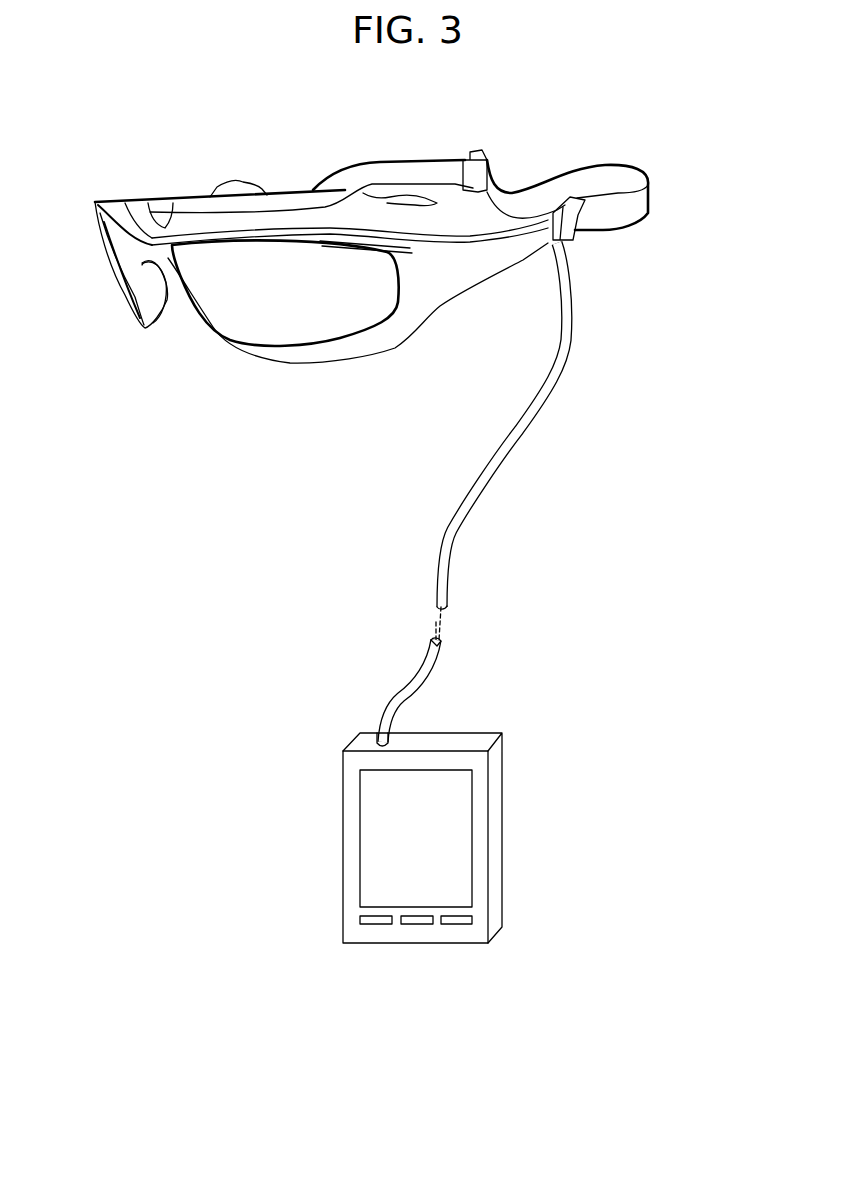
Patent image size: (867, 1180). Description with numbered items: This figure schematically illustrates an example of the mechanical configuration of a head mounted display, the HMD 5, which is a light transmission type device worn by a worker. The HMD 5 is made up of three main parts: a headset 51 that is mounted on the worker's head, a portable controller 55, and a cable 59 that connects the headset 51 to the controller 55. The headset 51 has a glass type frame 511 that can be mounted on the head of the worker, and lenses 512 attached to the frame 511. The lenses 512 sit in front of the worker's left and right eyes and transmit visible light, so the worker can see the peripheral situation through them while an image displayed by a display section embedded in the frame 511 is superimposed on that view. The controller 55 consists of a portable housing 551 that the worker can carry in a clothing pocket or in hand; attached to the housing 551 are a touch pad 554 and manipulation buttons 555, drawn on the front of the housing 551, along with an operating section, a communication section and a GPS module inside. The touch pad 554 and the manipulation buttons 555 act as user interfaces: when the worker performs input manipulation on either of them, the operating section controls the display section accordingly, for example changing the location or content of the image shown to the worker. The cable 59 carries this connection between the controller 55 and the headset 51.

The HMD 5 is at (650, 160).
The headset 51 is at (122, 202).
The frame 511 is at (410, 312).
The lenses 512 is at (270, 325).
The cable 59 is at (533, 405).
The controller 55 is at (429, 884).
The housing 551 is at (497, 880).
The touch pad 554 is at (378, 852).
The manipulation buttons 555 is at (457, 925).